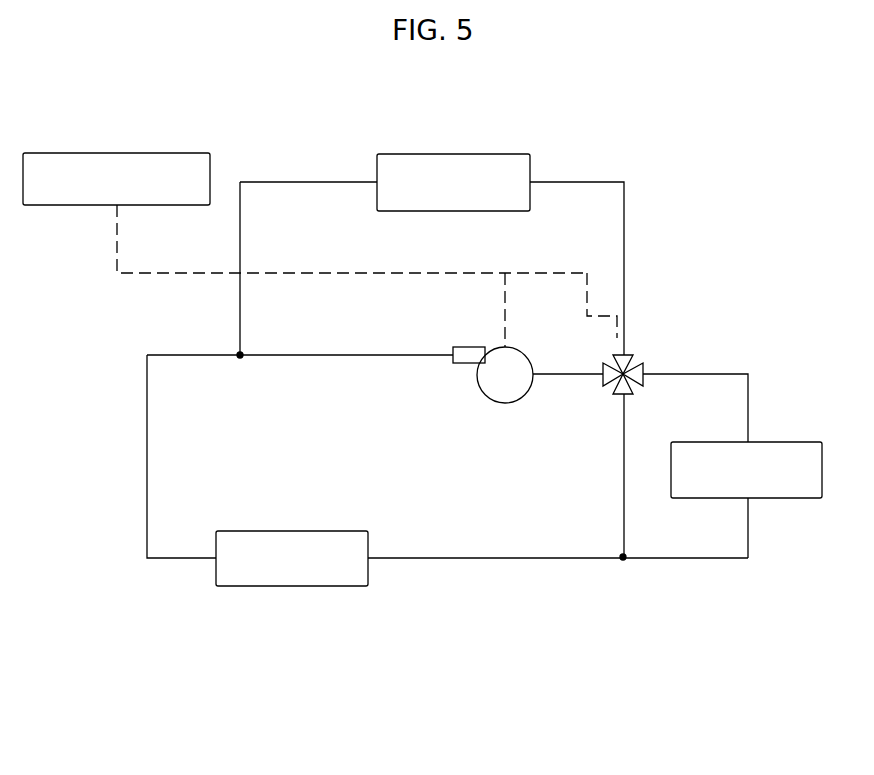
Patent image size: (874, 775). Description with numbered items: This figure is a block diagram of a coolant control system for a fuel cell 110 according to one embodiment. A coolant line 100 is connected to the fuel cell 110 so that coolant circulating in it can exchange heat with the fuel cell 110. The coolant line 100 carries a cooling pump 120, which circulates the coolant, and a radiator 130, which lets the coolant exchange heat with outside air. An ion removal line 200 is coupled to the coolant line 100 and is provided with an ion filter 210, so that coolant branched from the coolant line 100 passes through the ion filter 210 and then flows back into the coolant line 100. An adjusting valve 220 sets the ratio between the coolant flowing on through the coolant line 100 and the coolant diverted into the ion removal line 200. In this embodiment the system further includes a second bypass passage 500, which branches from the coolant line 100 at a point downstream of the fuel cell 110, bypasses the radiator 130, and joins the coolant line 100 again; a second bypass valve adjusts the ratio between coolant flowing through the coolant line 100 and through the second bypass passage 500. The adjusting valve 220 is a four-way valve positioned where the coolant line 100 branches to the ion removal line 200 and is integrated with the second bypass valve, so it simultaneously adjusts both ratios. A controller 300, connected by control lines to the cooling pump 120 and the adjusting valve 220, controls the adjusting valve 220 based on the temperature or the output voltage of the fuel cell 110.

The controller 300 is at (147, 153).
The ion filter 210 is at (500, 154).
The ion removal line 200 is at (624, 235).
The adjusting valve 220 is at (630, 358).
The second bypass passage 500 is at (622, 475).
The cooling pump 120 is at (482, 402).
The radiator 130 is at (797, 442).
The fuel cell 110 is at (268, 587).
The coolant line 100 is at (500, 559).